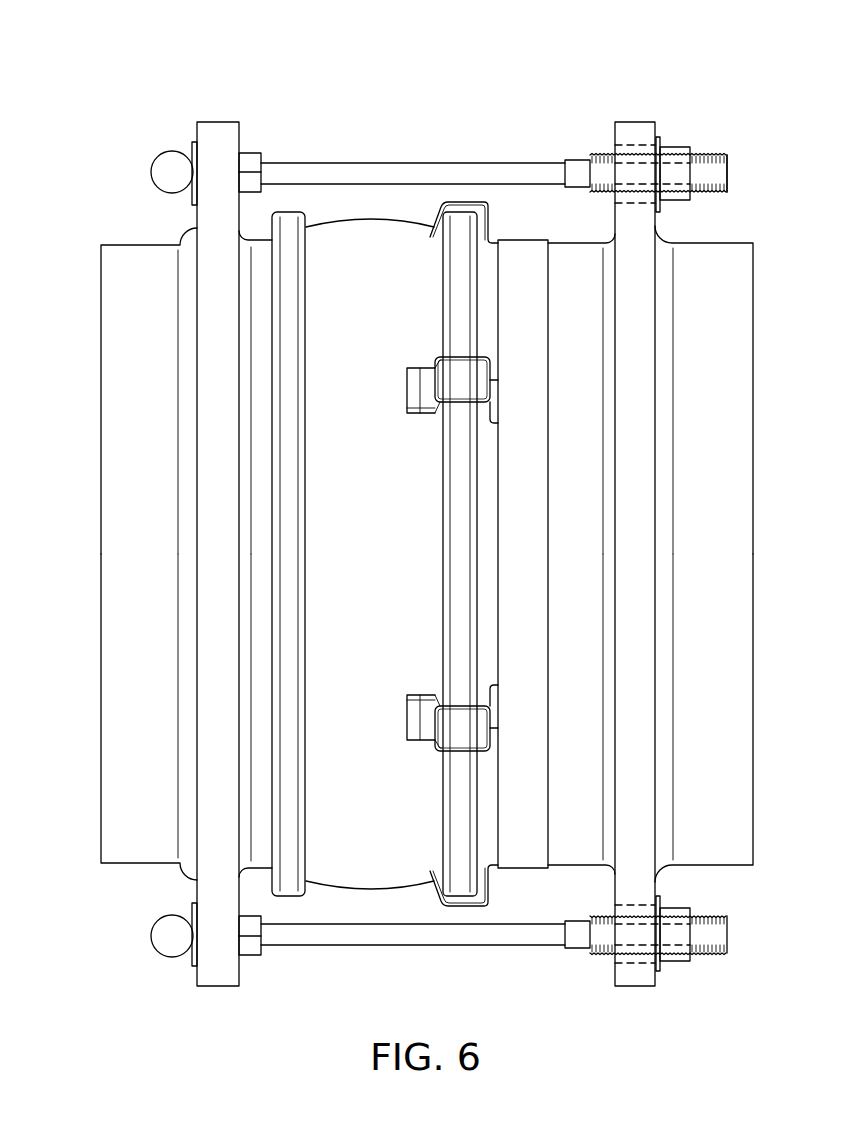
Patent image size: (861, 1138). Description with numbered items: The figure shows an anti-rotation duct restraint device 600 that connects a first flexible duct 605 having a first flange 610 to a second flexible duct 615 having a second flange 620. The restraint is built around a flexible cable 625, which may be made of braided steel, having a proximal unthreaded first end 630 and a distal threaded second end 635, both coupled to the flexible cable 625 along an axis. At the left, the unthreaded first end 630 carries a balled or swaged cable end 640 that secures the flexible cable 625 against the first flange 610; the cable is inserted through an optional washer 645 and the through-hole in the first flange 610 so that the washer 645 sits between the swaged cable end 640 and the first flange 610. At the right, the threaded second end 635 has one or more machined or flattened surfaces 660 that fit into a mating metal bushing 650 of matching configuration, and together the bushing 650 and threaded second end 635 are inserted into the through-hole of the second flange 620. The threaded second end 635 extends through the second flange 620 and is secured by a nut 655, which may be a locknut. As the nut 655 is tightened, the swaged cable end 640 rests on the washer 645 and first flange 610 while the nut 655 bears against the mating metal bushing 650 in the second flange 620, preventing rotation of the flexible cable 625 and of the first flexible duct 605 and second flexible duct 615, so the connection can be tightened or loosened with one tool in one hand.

The anti-rotation duct restraint device 600 is at (428, 493).
The first flexible duct 605 is at (115, 282).
The first flange 610 is at (218, 133).
The second flexible duct 615 is at (738, 282).
The second flange 620 is at (637, 133).
The flexible cable 625 is at (420, 128).
The unthreaded first end 630 is at (117, 529).
The threaded second end 635 is at (712, 155).
The swaged cable end 640 is at (161, 192).
The washer 645 is at (195, 140).
The mating metal bushing 650 is at (685, 113).
The nut 655 is at (690, 195).
The flattened surfaces 660 is at (717, 175).